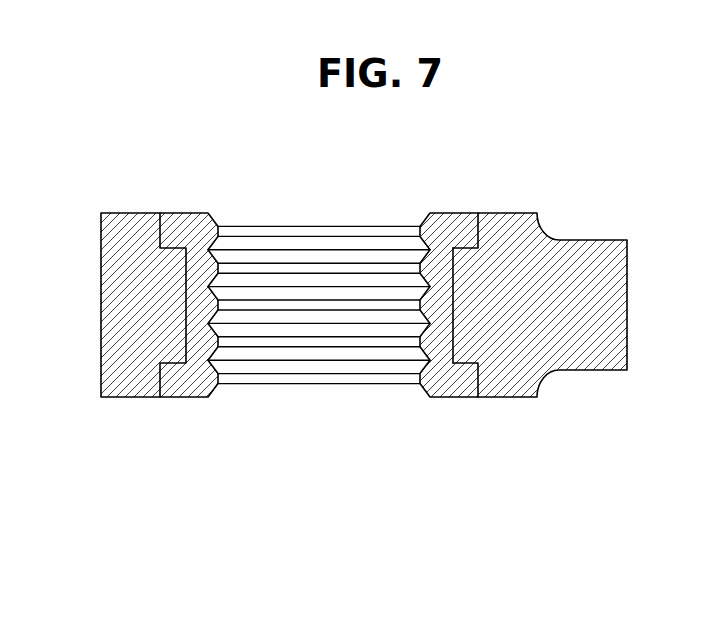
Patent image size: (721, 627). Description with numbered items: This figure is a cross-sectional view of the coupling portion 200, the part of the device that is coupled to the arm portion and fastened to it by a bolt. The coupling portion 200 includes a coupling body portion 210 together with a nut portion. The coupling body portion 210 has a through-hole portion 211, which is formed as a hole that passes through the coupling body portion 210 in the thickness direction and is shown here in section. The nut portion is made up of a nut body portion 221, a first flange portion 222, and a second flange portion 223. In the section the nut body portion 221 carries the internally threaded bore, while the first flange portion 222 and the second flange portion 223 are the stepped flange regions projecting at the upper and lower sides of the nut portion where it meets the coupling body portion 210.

The coupling portion 200 is at (603, 481).
The coupling body portion 210 is at (581, 333).
The through-hole portion 211 is at (186, 307).
The nut body portion 221 is at (437, 308).
The first flange portion 222 is at (458, 227).
The second flange portion 223 is at (463, 380).